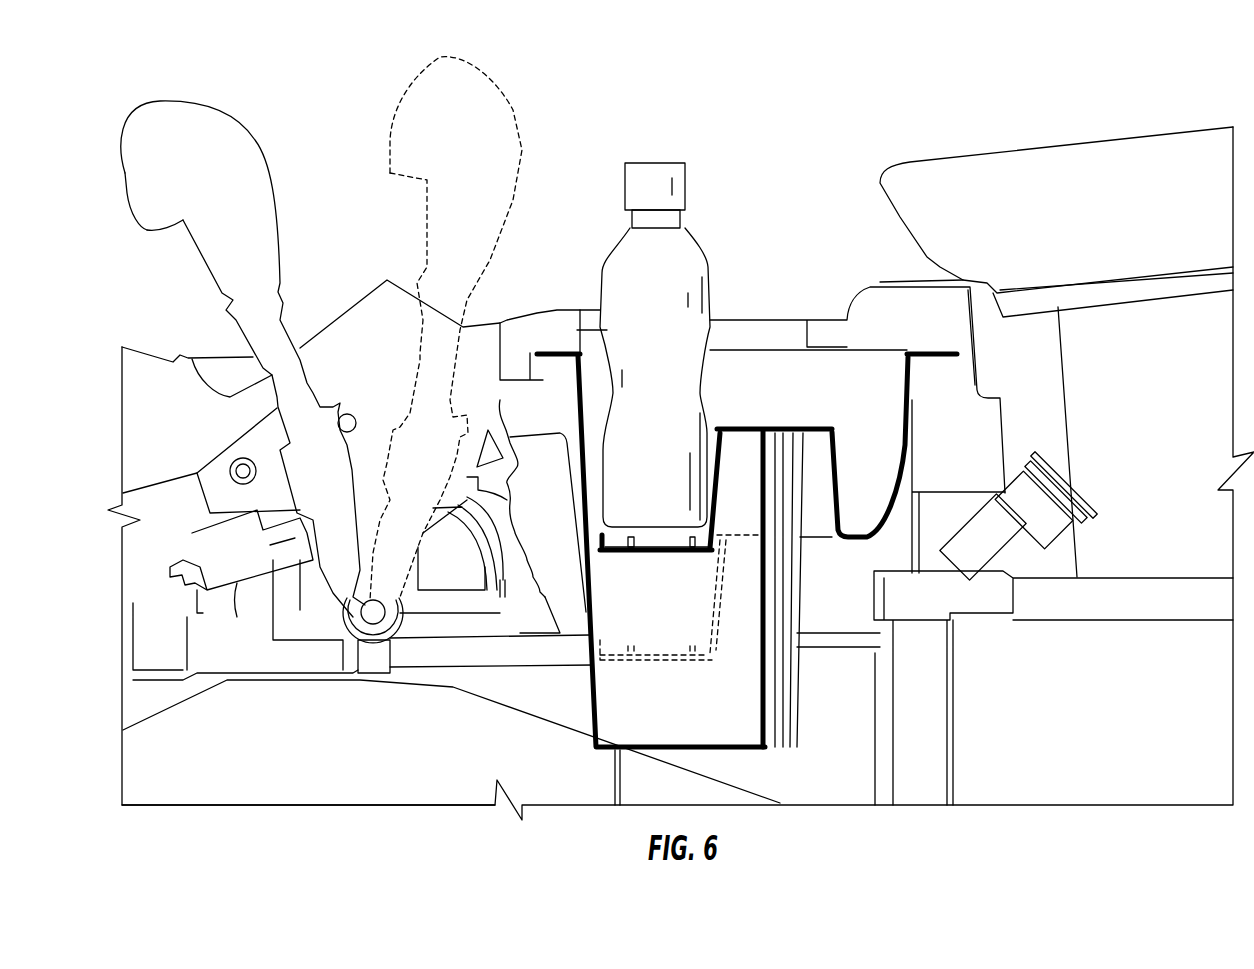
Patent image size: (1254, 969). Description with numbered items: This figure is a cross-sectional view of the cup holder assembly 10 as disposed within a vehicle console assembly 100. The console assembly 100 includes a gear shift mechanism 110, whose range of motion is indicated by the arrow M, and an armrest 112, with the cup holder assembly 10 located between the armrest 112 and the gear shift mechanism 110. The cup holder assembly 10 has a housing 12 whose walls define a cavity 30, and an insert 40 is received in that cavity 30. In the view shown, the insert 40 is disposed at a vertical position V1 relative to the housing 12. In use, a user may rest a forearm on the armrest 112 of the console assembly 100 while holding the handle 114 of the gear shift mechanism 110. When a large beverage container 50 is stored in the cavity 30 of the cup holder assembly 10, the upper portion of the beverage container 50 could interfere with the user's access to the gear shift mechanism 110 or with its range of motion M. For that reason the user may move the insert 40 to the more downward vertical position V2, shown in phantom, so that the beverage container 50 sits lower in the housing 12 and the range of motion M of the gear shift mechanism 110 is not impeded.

The console assembly 100 is at (588, 98).
The gear shift mechanism 110 is at (190, 100).
The armrest 112 is at (990, 170).
The handle 114 is at (167, 210).
The cup holder assembly 10 is at (747, 474).
The cavity 30 is at (717, 375).
The insert 40 is at (702, 546).
The beverage container 50 is at (610, 273).
The housing 12 is at (592, 702).
The vertical position V1 is at (618, 553).
The downward position V2 is at (650, 660).
The range of motion M is at (275, 158).